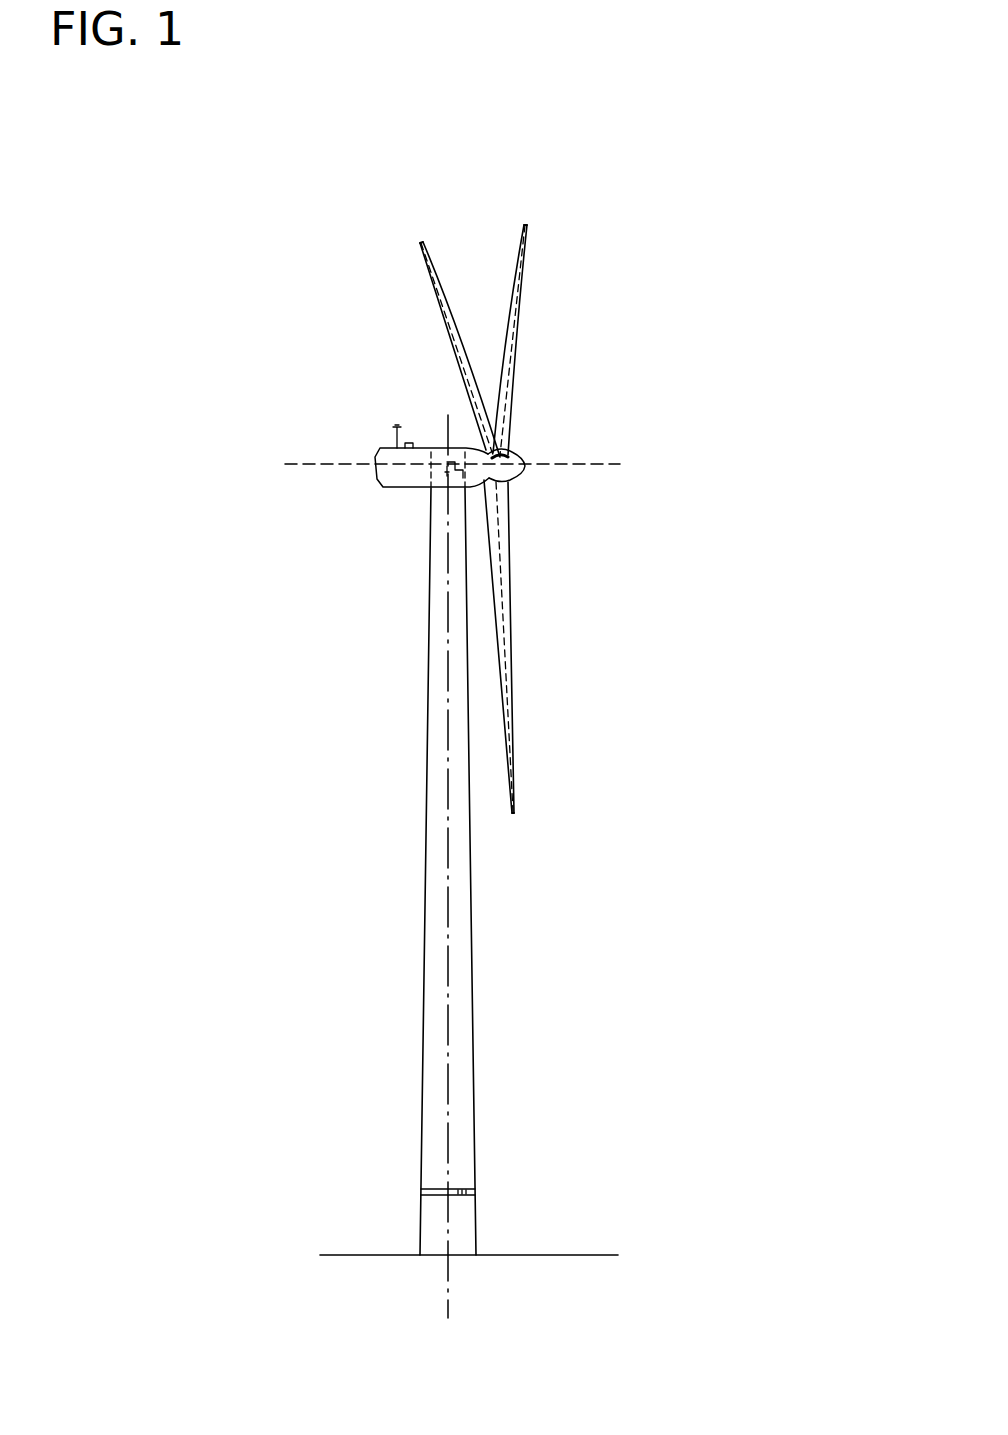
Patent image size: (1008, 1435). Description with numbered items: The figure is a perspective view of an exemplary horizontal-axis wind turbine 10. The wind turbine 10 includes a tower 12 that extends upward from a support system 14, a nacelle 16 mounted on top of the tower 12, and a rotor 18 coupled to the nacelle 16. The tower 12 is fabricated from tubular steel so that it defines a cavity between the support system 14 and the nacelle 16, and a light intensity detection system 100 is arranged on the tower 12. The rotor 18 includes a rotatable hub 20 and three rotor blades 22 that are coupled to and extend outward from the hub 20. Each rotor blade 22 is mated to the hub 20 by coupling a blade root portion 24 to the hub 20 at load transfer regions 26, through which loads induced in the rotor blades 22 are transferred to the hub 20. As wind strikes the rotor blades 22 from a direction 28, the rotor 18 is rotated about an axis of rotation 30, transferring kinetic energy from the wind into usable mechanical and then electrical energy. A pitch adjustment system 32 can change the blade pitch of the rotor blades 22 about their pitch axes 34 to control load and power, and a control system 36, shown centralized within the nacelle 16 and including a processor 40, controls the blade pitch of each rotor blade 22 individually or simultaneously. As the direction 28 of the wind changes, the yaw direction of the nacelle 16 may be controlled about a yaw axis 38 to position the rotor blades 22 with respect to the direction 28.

The wind turbine 10 is at (203, 243).
The tower 12 is at (425, 1026).
The support system 14 is at (378, 1255).
The nacelle 16 is at (396, 487).
The rotor 18 is at (535, 364).
The rotatable hub 20 is at (512, 457).
The rotor blade 22 is at (443, 309).
The blade root portion 24 is at (505, 571).
The load transfer region 26 is at (505, 488).
The direction 28 is at (853, 464).
The axis of rotation 30 is at (580, 465).
The pitch adjustment system 32 is at (470, 508).
The pitch axis 34 is at (419, 246).
The control system 36 is at (451, 490).
The yaw axis 38 is at (448, 913).
The processor 40 is at (449, 420).
The light intensity detection system 100 is at (500, 1186).